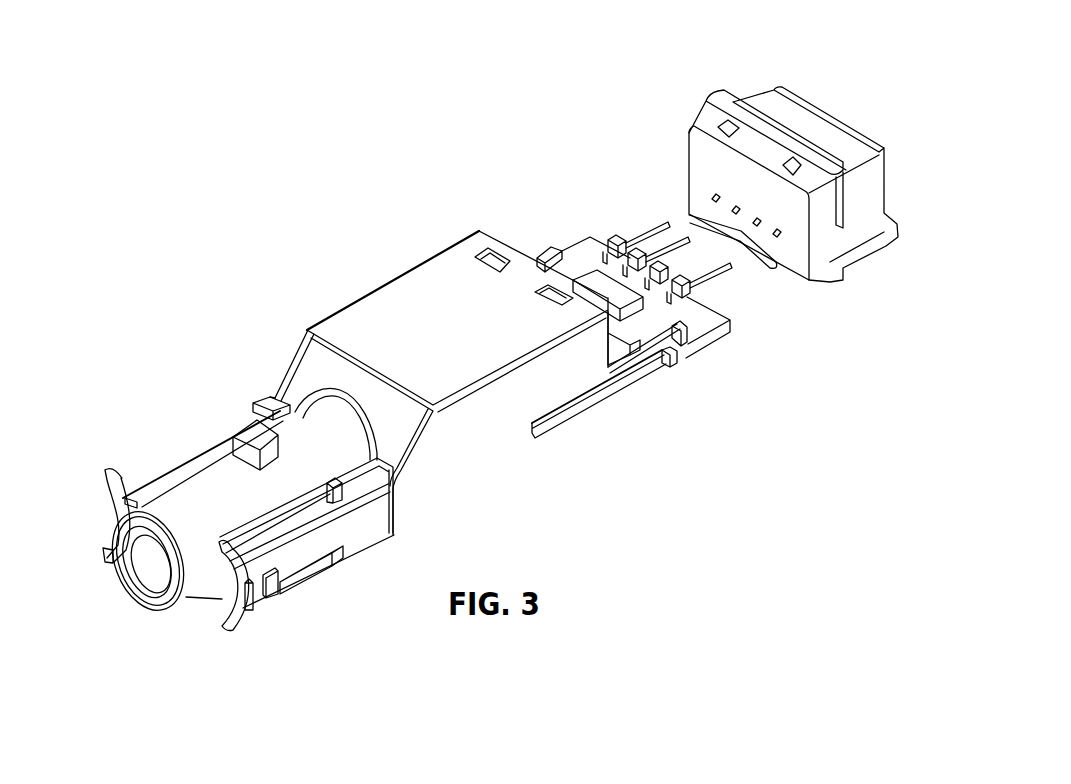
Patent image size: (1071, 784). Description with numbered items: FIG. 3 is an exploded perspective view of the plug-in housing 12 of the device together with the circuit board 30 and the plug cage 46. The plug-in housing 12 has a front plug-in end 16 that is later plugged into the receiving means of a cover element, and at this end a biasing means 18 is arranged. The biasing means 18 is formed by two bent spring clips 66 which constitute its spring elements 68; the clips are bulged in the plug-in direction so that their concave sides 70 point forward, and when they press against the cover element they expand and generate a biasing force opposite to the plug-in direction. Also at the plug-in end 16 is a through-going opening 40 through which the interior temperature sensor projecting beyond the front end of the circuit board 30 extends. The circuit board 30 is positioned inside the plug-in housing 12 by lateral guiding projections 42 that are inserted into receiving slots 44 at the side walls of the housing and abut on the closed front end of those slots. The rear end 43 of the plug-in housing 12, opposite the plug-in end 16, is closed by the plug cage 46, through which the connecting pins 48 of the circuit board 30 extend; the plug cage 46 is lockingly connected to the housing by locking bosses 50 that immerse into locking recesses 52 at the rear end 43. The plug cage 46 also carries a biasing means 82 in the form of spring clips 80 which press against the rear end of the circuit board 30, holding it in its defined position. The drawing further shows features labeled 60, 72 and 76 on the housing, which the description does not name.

The plug-in housing 12 is at (433, 282).
The front plug-in end 16 is at (133, 436).
The biasing means 18 is at (253, 651).
The circuit board 30 is at (687, 327).
The through-going opening 40 is at (176, 580).
The lateral guiding projections 42 is at (587, 245).
The rear end 43 is at (556, 204).
The receiving slots 44 is at (641, 367).
The plug cage 46 is at (872, 197).
The connecting pins 48 is at (722, 292).
The locking bosses 50 is at (725, 132).
The locking recesses 52 is at (500, 256).
The latch 60 is at (246, 449).
The bent spring clips 66 is at (110, 502).
The spring elements 68 is at (100, 456).
The concave sides 70 is at (115, 509).
The catch 72 is at (297, 408).
The rib 76 is at (317, 557).
The spring clips 80 is at (689, 220).
The biasing means 82 is at (762, 233).